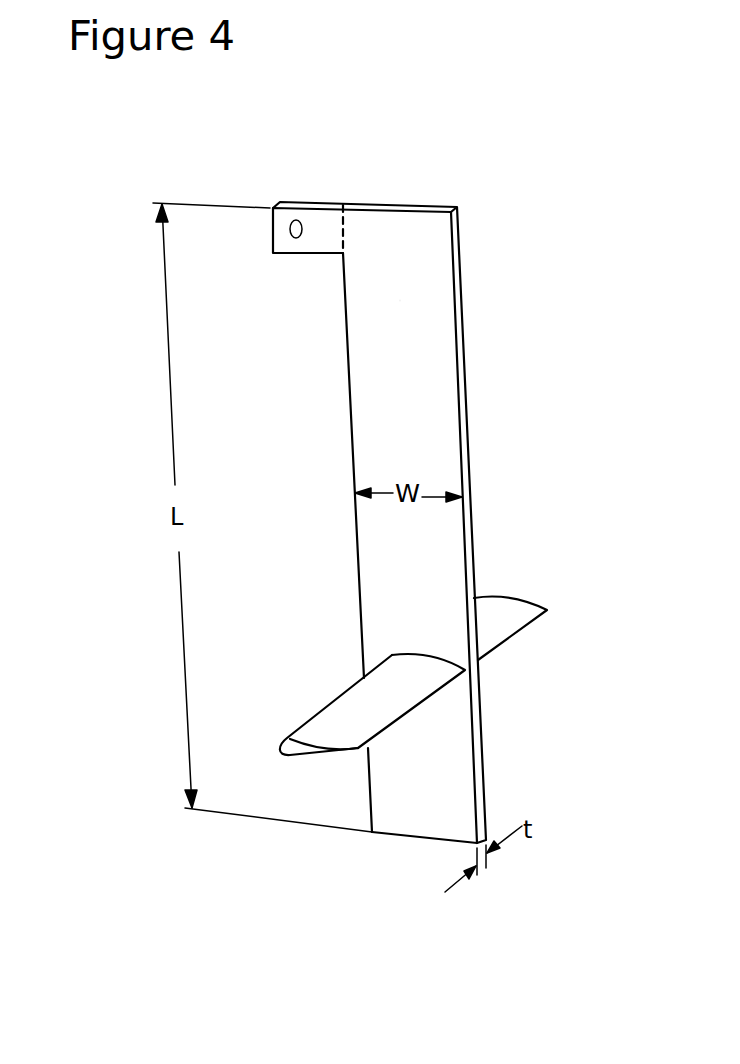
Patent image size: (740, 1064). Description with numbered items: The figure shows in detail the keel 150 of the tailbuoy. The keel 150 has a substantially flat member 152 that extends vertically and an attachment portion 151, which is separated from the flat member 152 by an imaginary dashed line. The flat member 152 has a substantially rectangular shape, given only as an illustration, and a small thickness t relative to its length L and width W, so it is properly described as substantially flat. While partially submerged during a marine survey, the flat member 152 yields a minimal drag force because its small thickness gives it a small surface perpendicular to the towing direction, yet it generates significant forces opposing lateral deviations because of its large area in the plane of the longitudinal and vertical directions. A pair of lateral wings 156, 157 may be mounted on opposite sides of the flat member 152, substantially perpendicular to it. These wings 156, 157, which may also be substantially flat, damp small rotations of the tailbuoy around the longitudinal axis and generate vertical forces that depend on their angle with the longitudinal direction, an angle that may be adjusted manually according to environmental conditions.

The keel 150 is at (458, 304).
The attachment portion 151 is at (315, 235).
The flat member 152 is at (422, 445).
The lateral wing 156 is at (345, 710).
The lateral wing 157 is at (507, 612).